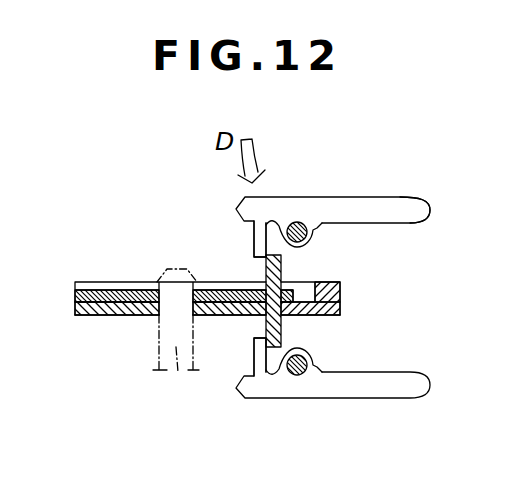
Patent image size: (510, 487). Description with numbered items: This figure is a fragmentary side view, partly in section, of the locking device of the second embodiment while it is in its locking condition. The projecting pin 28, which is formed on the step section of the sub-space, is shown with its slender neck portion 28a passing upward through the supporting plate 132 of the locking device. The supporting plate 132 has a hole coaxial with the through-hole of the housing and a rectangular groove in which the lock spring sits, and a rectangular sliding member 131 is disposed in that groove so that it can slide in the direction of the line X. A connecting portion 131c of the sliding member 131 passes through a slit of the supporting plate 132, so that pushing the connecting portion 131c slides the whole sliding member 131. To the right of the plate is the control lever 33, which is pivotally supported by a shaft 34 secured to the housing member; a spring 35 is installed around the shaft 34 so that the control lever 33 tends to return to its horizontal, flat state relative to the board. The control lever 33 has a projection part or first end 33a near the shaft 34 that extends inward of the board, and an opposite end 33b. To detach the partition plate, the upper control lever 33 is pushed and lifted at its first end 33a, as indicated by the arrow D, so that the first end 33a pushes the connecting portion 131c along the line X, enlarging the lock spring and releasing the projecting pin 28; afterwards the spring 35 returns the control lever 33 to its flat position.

The projecting pin 28 is at (178, 372).
The neck portion 28a is at (177, 304).
The control lever 33 is at (303, 285).
The first end 33a is at (254, 243).
The bracket arm tip 33b is at (413, 213).
The shaft 34 is at (297, 222).
The spring 35 is at (316, 229).
The sliding member 131 is at (93, 290).
The connecting portion 131c is at (281, 330).
The supporting plate 132 is at (91, 316).